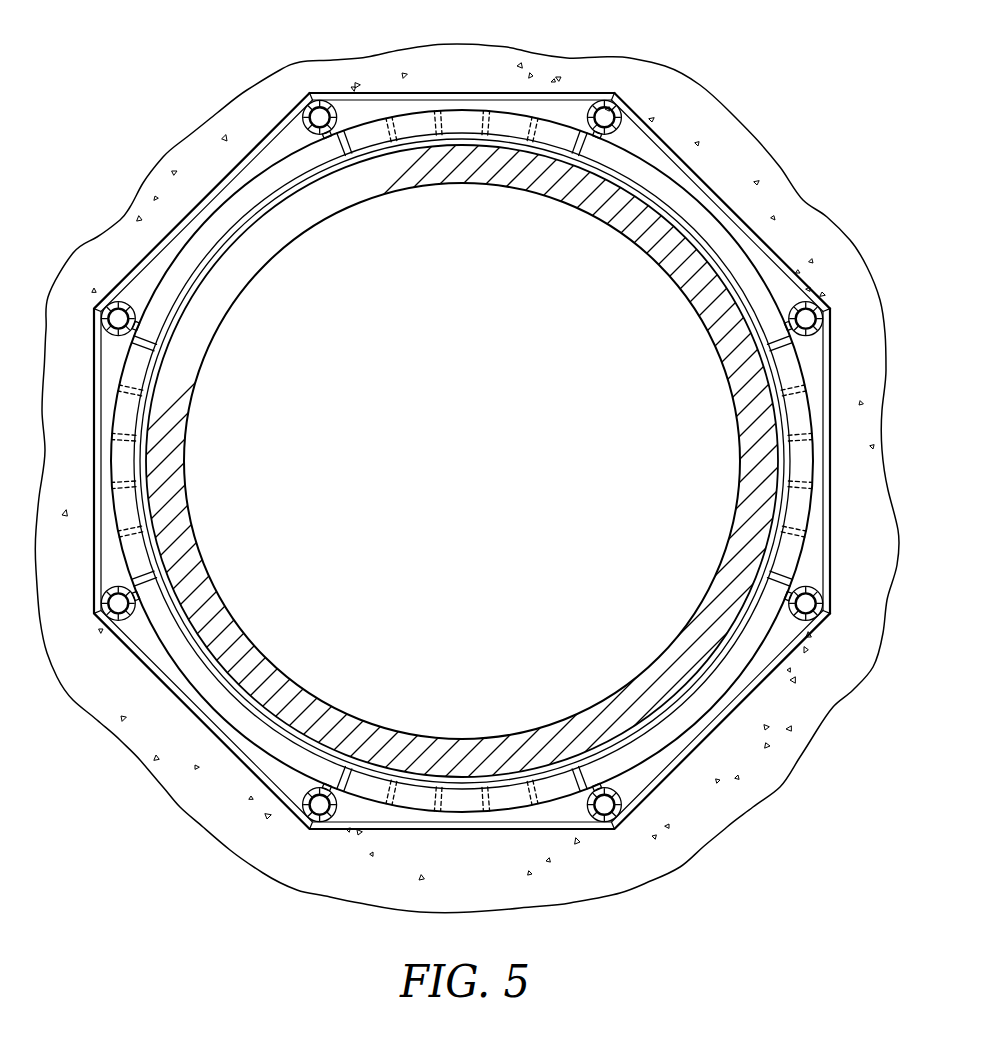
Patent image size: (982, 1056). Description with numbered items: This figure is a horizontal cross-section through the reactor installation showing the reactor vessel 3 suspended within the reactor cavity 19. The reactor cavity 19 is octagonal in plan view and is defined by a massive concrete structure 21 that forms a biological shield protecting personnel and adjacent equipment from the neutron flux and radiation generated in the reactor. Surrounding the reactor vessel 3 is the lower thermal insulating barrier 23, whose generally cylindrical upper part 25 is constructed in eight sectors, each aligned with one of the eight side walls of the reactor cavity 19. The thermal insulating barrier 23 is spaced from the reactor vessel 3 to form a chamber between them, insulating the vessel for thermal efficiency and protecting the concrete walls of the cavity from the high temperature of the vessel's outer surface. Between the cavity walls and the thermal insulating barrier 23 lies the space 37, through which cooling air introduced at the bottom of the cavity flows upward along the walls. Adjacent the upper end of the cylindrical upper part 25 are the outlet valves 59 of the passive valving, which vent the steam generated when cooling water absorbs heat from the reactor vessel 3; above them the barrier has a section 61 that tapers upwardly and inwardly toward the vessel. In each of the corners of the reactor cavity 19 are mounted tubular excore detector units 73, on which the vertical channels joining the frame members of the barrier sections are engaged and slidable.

The reactor vessel 3 is at (209, 344).
The reactor cavity 19 is at (375, 97).
The concrete structure 21 is at (235, 130).
The lower thermal insulating barrier 23 is at (764, 284).
The cylindrical upper part 25 is at (665, 181).
The space 37 is at (822, 419).
The outlet valves 59 is at (560, 139).
The section 61 is at (210, 243).
The tubular excore detector units 73 is at (133, 611).